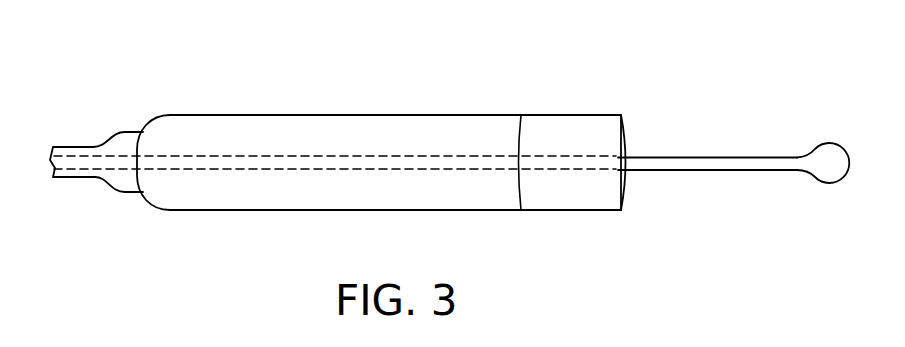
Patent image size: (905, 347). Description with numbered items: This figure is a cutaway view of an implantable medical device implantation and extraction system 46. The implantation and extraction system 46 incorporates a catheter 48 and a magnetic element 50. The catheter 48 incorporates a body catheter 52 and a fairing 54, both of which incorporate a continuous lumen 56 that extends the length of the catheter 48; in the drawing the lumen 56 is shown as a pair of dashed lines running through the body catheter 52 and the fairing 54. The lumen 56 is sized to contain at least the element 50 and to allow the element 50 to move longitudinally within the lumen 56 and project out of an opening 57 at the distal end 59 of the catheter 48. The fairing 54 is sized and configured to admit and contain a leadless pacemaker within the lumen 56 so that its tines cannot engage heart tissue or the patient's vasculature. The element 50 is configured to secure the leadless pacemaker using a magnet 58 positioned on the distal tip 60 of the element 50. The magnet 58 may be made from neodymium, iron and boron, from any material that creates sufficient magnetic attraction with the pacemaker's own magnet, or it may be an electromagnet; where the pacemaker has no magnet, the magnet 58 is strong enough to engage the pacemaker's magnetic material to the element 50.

The implantable medical device implantation and extraction system 46 is at (492, 70).
The catheter 48 is at (193, 108).
The magnetic element 50 is at (712, 155).
The body catheter 52 is at (85, 147).
The fairing 54 is at (288, 114).
The lumen 56 is at (362, 135).
The opening 57 is at (628, 138).
The magnet 58 is at (837, 155).
The distal end 59 is at (543, 133).
The distal tip 60 is at (828, 170).